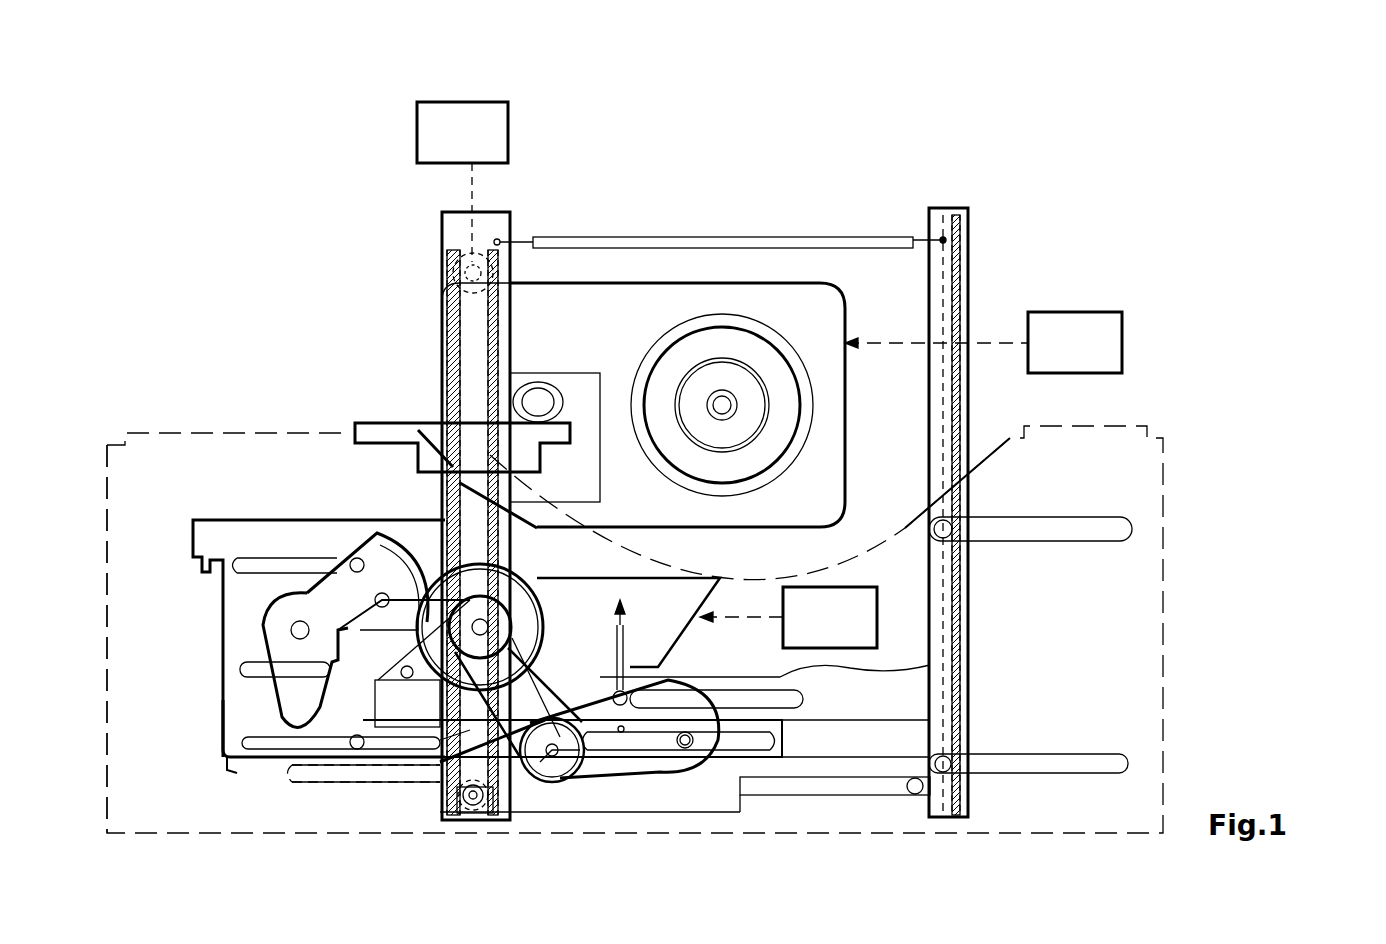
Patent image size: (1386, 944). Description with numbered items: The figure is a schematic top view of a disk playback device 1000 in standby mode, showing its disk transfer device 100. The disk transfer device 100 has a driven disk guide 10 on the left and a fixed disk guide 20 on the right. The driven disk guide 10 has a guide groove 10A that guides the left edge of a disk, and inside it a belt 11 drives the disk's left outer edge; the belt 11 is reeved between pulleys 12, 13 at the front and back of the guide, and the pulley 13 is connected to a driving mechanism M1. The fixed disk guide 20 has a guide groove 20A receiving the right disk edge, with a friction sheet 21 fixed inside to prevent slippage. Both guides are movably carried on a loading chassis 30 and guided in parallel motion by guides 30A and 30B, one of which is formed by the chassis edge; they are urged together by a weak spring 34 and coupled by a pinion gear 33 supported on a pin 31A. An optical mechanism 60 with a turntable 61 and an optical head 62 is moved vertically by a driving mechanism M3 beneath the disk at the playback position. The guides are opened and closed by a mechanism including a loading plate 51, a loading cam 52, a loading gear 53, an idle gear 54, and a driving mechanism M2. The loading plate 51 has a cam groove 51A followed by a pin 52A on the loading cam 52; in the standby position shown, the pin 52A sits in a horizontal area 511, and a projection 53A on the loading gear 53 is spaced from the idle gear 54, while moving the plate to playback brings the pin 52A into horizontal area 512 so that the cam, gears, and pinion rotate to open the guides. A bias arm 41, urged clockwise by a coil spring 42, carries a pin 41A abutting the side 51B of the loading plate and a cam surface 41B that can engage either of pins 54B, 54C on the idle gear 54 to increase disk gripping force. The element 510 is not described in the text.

The disk playback device 1000 is at (1060, 165).
The disk transfer device 100 is at (322, 302).
The driven disk guide 10 is at (455, 238).
The guide groove 10A is at (495, 322).
The belt 11 is at (490, 368).
The pulley 12 is at (478, 812).
The pulley 13 is at (463, 280).
The driving mechanism M1 is at (462, 132).
The fixed disk guide 20 is at (1033, 227).
The guide groove 20A is at (938, 215).
The friction sheet 21 is at (955, 296).
The driving mechanism M3 is at (983, 342).
The loading chassis 30 is at (1153, 503).
The guide 30A is at (345, 425).
The guide 30B is at (1027, 515).
The spring 34 is at (775, 238).
The optical mechanism 60 is at (840, 308).
The turntable 61 is at (752, 340).
The optical head 62 is at (548, 378).
The driving mechanism M2 is at (788, 617).
The bias arm 41 is at (650, 770).
The pin 41A is at (443, 817).
The cam surface 41B is at (650, 690).
The coil spring 42 is at (640, 660).
The pinion gear 33 is at (565, 772).
The pin 31A is at (580, 780).
The loading plate 51 is at (305, 530).
The cam groove 51A is at (135, 660).
The side 51B is at (232, 770).
The horizontal area 511 is at (330, 700).
The horizontal area 512 is at (258, 678).
The loading cam 52 is at (273, 628).
The pin 52A is at (412, 612).
The loading gear 53 is at (530, 618).
The projection 53A is at (418, 560).
The idle gear 54 is at (520, 690).
The pin 54B is at (370, 775).
The pin 54C is at (450, 740).
The stopper 510 is at (495, 814).